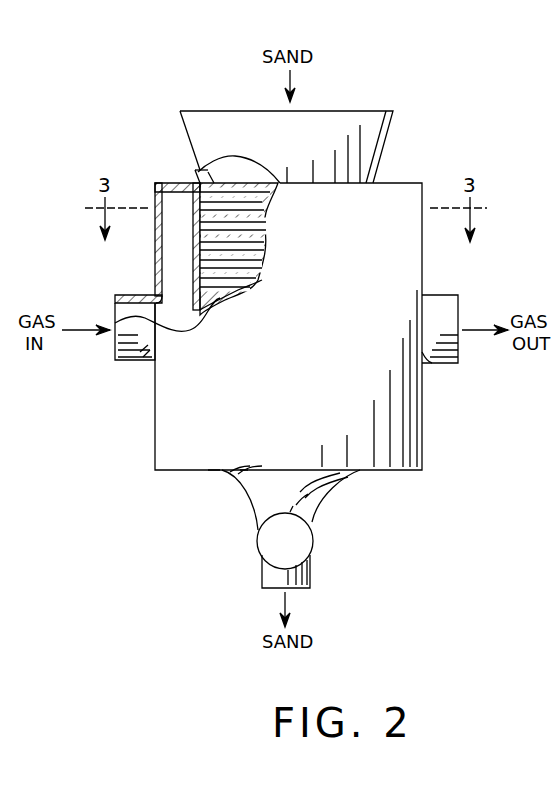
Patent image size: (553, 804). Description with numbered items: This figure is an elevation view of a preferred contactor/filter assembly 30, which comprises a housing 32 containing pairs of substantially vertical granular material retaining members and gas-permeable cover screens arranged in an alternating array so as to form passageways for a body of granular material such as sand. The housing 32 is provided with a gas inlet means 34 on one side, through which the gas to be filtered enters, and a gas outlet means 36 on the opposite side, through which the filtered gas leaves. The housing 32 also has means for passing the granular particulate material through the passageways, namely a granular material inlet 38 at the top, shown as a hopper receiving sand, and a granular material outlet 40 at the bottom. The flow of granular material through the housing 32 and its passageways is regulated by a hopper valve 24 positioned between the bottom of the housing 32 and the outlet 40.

The hopper valve 24 is at (313, 548).
The contactor/filter assembly 30 is at (388, 163).
The housing 32 is at (405, 183).
The gas inlet means 34 is at (130, 362).
The gas outlet means 36 is at (442, 363).
The granular material inlet 38 is at (340, 110).
The granular material outlet 40 is at (262, 574).